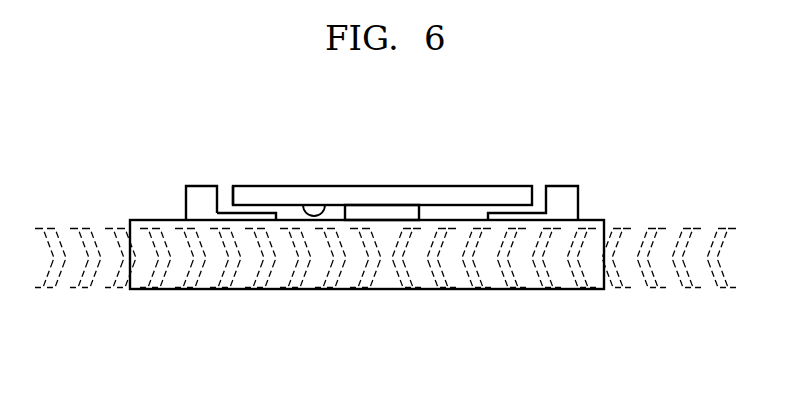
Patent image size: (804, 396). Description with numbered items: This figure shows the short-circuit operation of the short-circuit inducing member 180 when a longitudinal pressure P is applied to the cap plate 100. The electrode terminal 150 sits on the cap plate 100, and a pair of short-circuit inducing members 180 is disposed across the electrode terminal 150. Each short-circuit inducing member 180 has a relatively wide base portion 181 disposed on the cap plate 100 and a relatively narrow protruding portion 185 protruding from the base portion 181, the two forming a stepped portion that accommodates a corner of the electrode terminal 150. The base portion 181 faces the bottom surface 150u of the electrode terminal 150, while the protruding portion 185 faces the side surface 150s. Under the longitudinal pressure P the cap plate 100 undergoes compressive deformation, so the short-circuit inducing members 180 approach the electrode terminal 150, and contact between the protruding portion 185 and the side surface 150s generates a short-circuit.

The cap plate 100 is at (597, 219).
The electrode terminal 150 is at (455, 186).
The side surface of the electrode terminal 150s is at (234, 195).
The bottom surface of the electrode terminal 150u is at (322, 208).
The short-circuit inducing member 180 is at (367, 283).
The base portion 181 is at (258, 215).
The protruding portion 185 is at (190, 200).
The longitudinal pressure P is at (406, 258).